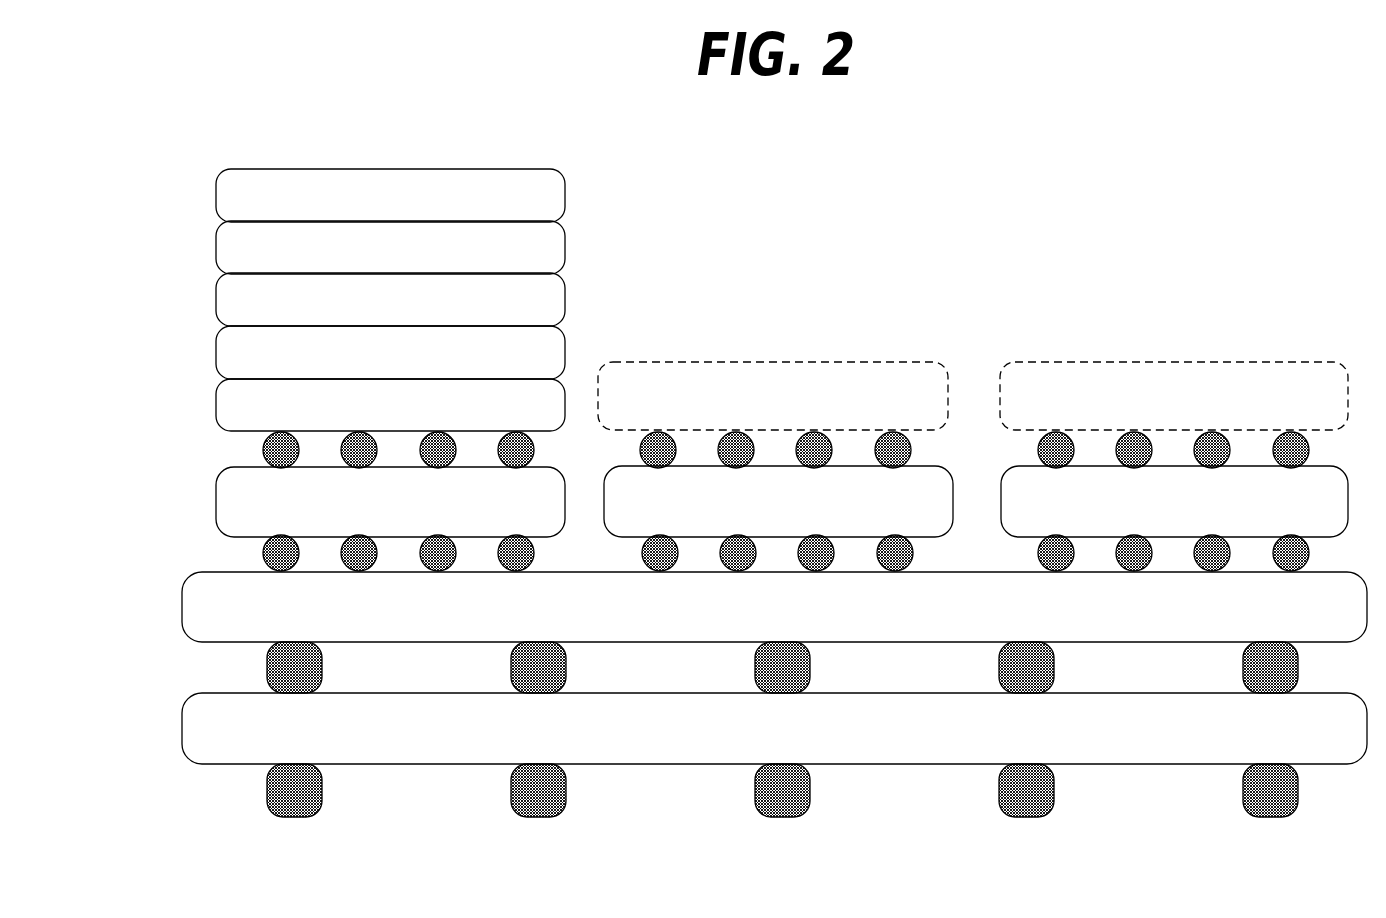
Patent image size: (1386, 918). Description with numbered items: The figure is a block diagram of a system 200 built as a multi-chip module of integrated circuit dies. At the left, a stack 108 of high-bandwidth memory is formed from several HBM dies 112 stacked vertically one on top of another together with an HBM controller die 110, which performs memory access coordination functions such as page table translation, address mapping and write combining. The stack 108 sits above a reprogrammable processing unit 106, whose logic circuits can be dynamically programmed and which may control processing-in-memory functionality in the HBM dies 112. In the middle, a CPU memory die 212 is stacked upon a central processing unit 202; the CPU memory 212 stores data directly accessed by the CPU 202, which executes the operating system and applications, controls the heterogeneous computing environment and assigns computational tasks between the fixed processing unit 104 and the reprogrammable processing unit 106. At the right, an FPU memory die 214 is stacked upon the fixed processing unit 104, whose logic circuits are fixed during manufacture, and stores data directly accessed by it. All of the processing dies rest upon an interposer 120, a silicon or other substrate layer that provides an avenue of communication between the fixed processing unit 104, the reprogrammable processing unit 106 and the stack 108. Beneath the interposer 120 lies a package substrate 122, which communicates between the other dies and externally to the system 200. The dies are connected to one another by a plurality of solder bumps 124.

The system 200 is at (1236, 90).
The stack 108 is at (180, 163).
The HBM dies 112 is at (390, 274).
The HBM controller die 110 is at (390, 405).
The reprogrammable processing unit 106 is at (390, 502).
The CPU memory die 212 is at (773, 396).
The central processing unit 202 is at (778, 501).
The FPU memory die 214 is at (1174, 396).
The fixed processing unit 104 is at (1174, 501).
The interposer 120 is at (774, 607).
The package substrate die 122 is at (774, 728).
The solder bumps 124 is at (1314, 811).